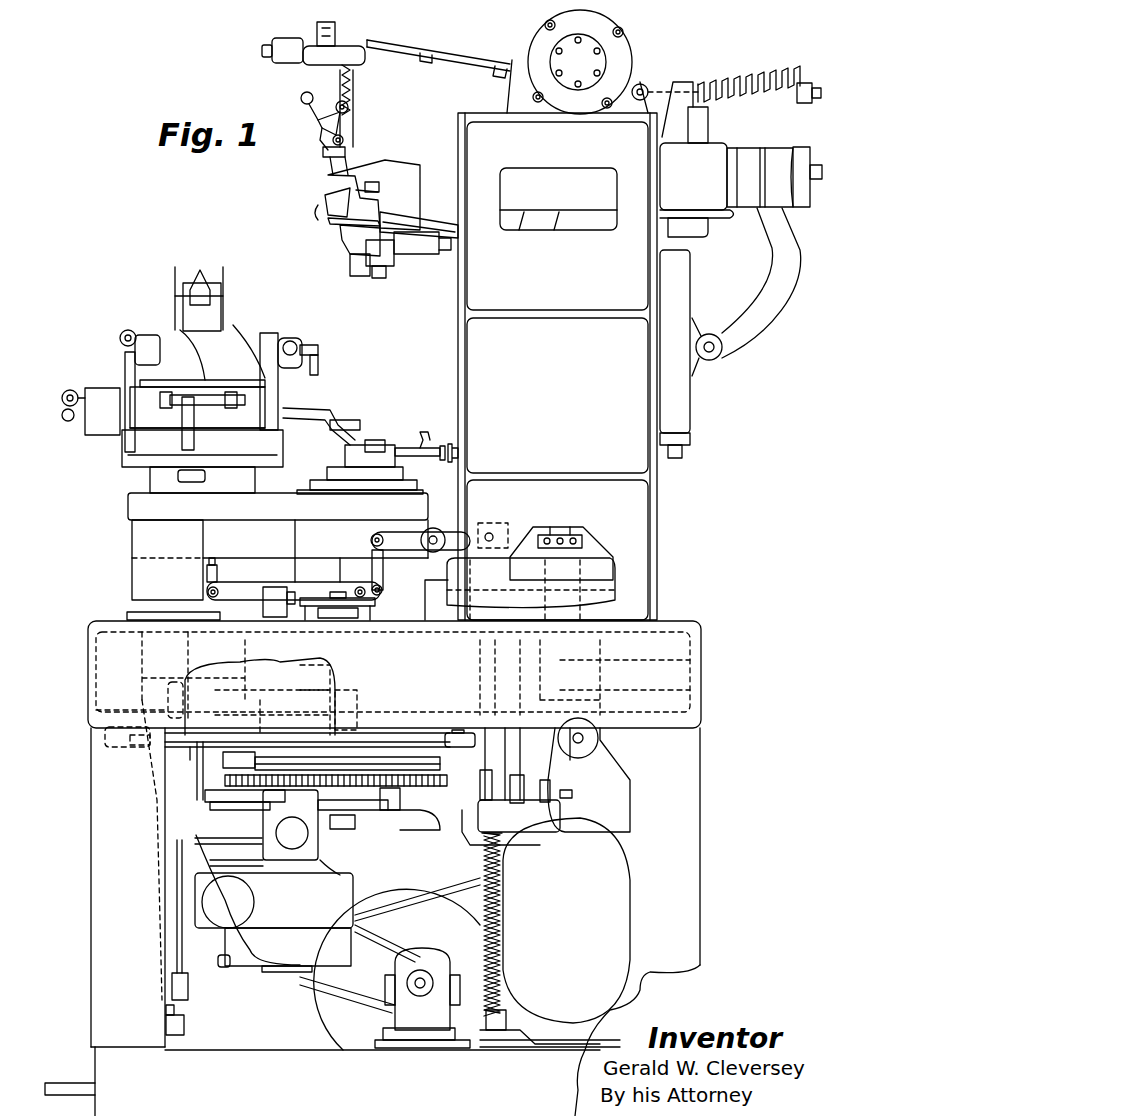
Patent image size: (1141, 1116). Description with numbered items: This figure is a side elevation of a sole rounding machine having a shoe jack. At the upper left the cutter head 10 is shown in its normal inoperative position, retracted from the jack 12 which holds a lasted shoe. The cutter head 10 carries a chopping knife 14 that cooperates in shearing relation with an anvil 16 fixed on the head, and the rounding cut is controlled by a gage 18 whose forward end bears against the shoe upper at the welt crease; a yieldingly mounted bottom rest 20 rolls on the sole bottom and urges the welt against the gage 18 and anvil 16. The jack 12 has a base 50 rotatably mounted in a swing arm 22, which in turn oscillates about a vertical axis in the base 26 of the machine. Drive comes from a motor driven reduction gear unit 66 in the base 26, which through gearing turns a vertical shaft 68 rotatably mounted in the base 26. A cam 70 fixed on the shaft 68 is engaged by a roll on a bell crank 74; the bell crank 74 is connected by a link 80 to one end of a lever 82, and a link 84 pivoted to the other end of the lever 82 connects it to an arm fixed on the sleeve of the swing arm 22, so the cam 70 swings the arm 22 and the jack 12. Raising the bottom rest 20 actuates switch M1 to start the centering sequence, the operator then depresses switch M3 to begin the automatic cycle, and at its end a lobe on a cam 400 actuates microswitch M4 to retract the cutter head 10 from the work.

The cutter head 10 is at (292, 115).
The jack 12 is at (137, 316).
The chopping knife 14 is at (345, 200).
The anvil 16 is at (348, 236).
The gage 18 is at (335, 222).
The bottom rest 20 is at (328, 208).
The swing arm 22 is at (128, 502).
The base 26 is at (703, 674).
The base of the jack 50 is at (120, 464).
The motor driven reduction gear unit 66 is at (349, 898).
The vertical shaft 68 is at (380, 790).
The cam 70 is at (425, 760).
The bell crank 74 is at (217, 748).
The link 80 is at (105, 740).
The lever 82 is at (372, 735).
The link 84 is at (462, 733).
The cam 400 is at (358, 598).
The switch M1 is at (325, 42).
The switch M3 is at (313, 36).
The microswitch M4 is at (262, 595).